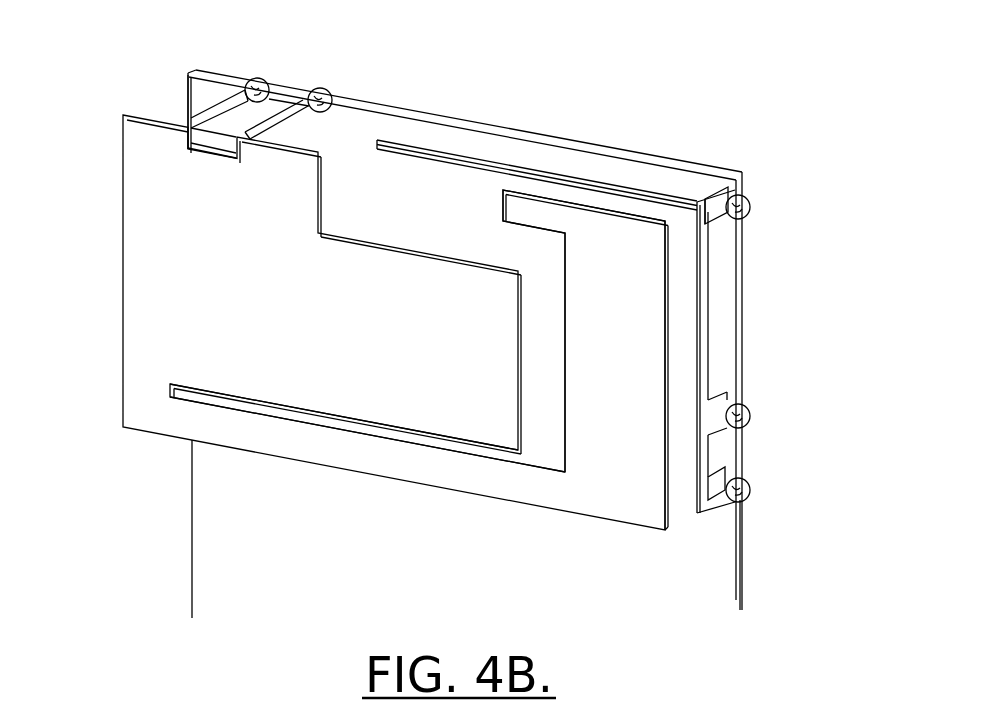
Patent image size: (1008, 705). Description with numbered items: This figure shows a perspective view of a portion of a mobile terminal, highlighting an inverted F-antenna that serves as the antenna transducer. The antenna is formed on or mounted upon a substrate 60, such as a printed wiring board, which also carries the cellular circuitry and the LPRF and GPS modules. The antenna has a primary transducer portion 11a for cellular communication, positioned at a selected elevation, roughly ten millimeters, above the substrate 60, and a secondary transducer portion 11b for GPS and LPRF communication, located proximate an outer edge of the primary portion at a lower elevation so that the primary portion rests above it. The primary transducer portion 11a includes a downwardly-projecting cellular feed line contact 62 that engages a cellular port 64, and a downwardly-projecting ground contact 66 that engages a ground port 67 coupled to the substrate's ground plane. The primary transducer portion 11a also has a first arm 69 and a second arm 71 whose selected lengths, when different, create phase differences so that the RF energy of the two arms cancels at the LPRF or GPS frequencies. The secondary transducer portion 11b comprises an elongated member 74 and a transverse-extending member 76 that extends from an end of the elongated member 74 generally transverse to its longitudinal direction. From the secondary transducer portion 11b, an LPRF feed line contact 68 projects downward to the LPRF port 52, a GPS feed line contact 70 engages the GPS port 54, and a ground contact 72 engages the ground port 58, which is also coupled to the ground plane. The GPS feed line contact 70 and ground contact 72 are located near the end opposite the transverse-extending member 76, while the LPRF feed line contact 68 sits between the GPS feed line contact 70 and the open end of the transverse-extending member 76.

The primary transducer portion 11a is at (345, 322).
The secondary transducer portion 11b is at (465, 340).
The LPRF port 52 is at (782, 171).
The GPS port 54 is at (791, 365).
The ground port 58 is at (697, 524).
The substrate 60 is at (319, 583).
The cellular feed line contact 62 is at (199, 77).
The cellular port 64 is at (293, 54).
The ground contact 66 is at (309, 87).
The ground port 67 is at (352, 89).
The LPRF feed line contact 68 is at (731, 176).
The first arm 69 is at (584, 379).
The GPS feed line contact 70 is at (780, 352).
The second arm 71 is at (367, 458).
The ground contact 72 is at (791, 450).
The elongated member 74 is at (766, 351).
The transverse-extending member 76 is at (537, 160).